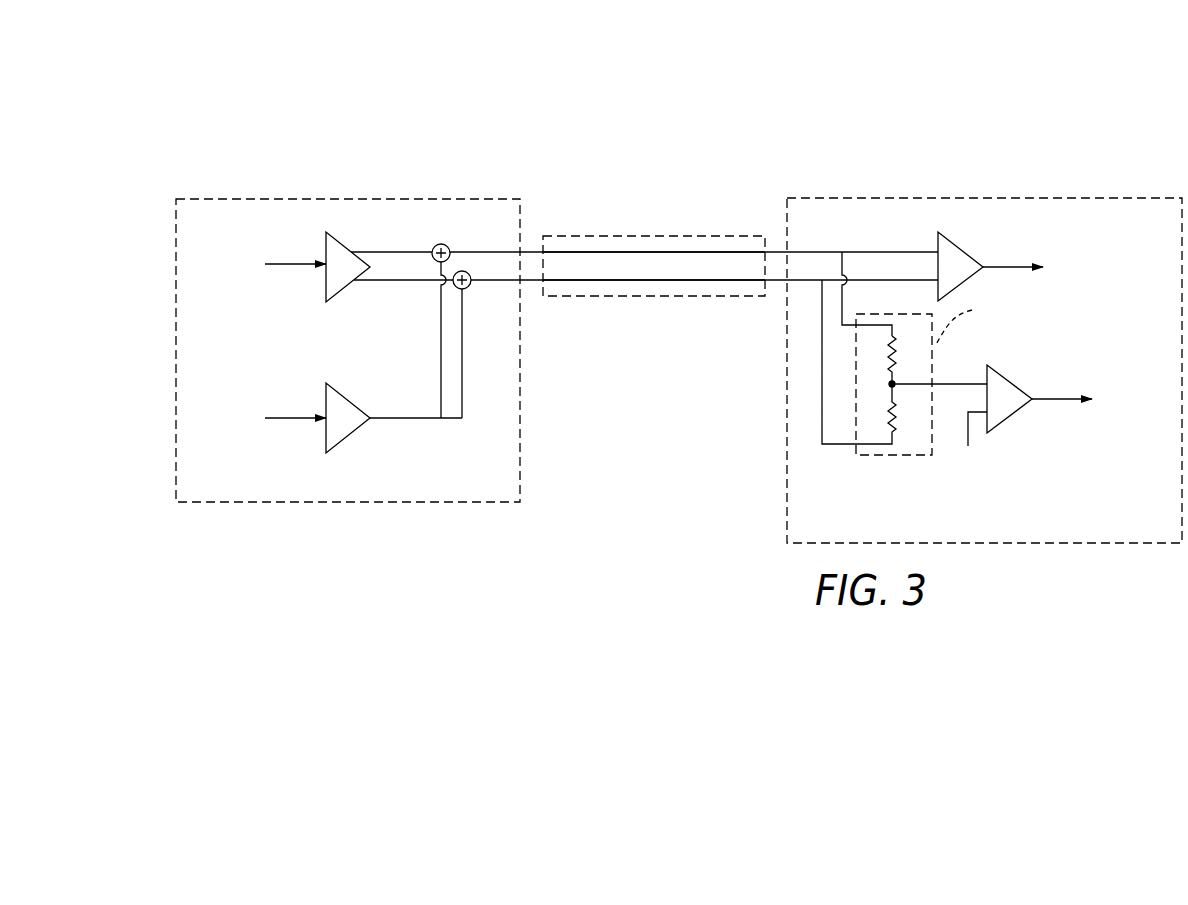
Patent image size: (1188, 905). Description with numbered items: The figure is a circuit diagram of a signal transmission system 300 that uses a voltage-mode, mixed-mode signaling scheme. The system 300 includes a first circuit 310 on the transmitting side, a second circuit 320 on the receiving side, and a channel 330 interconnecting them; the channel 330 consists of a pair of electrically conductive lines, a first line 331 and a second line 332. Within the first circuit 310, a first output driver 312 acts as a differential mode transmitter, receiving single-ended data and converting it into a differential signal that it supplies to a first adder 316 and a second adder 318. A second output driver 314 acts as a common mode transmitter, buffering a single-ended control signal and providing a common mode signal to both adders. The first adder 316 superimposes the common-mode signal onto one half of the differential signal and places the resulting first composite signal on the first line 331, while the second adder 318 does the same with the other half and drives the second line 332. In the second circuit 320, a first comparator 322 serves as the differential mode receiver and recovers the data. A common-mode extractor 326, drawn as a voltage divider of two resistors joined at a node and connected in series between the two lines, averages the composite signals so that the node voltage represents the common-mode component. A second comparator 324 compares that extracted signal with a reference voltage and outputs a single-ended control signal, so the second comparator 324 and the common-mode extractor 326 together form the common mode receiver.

The system 300 is at (651, 116).
The first circuit 310 is at (447, 197).
The first output driver 312 is at (333, 236).
The second output driver 314 is at (333, 386).
The first adder 316 is at (446, 245).
The second adder 318 is at (468, 289).
The second circuit 320 is at (1108, 196).
The first comparator 322 is at (957, 246).
The second comparator 324 is at (1006, 378).
The common-mode extractor 326 is at (898, 457).
The channel 330 is at (690, 236).
The first line 331 is at (597, 251).
The second line 332 is at (601, 282).